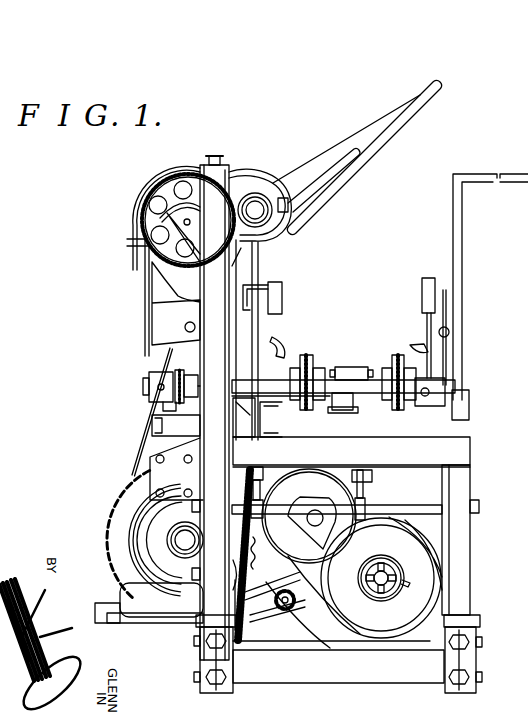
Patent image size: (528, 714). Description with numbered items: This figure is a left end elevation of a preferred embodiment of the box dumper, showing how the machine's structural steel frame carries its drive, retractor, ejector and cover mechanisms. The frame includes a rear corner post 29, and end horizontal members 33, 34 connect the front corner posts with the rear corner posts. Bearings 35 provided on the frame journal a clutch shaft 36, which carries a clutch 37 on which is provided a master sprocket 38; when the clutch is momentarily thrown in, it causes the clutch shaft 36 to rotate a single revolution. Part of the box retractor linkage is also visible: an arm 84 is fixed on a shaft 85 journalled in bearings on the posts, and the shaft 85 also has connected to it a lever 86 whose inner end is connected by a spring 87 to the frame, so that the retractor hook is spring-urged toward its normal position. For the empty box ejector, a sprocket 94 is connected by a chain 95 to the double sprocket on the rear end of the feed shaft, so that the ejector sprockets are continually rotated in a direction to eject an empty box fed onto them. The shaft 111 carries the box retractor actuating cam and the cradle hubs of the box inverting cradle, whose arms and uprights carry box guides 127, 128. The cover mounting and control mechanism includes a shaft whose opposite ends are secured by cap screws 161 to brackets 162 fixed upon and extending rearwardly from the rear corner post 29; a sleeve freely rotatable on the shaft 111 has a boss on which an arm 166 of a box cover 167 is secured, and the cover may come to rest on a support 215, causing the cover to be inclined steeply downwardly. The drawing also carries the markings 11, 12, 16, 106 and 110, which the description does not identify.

The section line 11 is at (359, 340).
The carriage block 12 is at (352, 375).
The platform 16 is at (356, 370).
The rear corner post 29 is at (203, 600).
The end horizontal member 33 is at (417, 460).
The end horizontal member 34 is at (379, 677).
The bearings 35 is at (198, 557).
The clutch shaft 36 is at (193, 537).
The clutch 37 is at (143, 549).
The master sprocket 38 is at (121, 520).
The arm 84 is at (365, 496).
The shaft 85 is at (420, 508).
The lever 86 is at (264, 503).
The spring 87 is at (266, 531).
The sprocket 94 is at (189, 375).
The chain 95 is at (166, 372).
The gear 106 is at (144, 218).
The bearing housing 110 is at (238, 189).
The shaft 111 is at (245, 211).
The box guide 127 is at (284, 287).
The box guide 128 is at (425, 290).
The cap screws 161 is at (186, 328).
The brackets 162 is at (156, 322).
The arm 166 is at (325, 162).
The box cover 167 is at (410, 123).
The support 215 is at (147, 277).